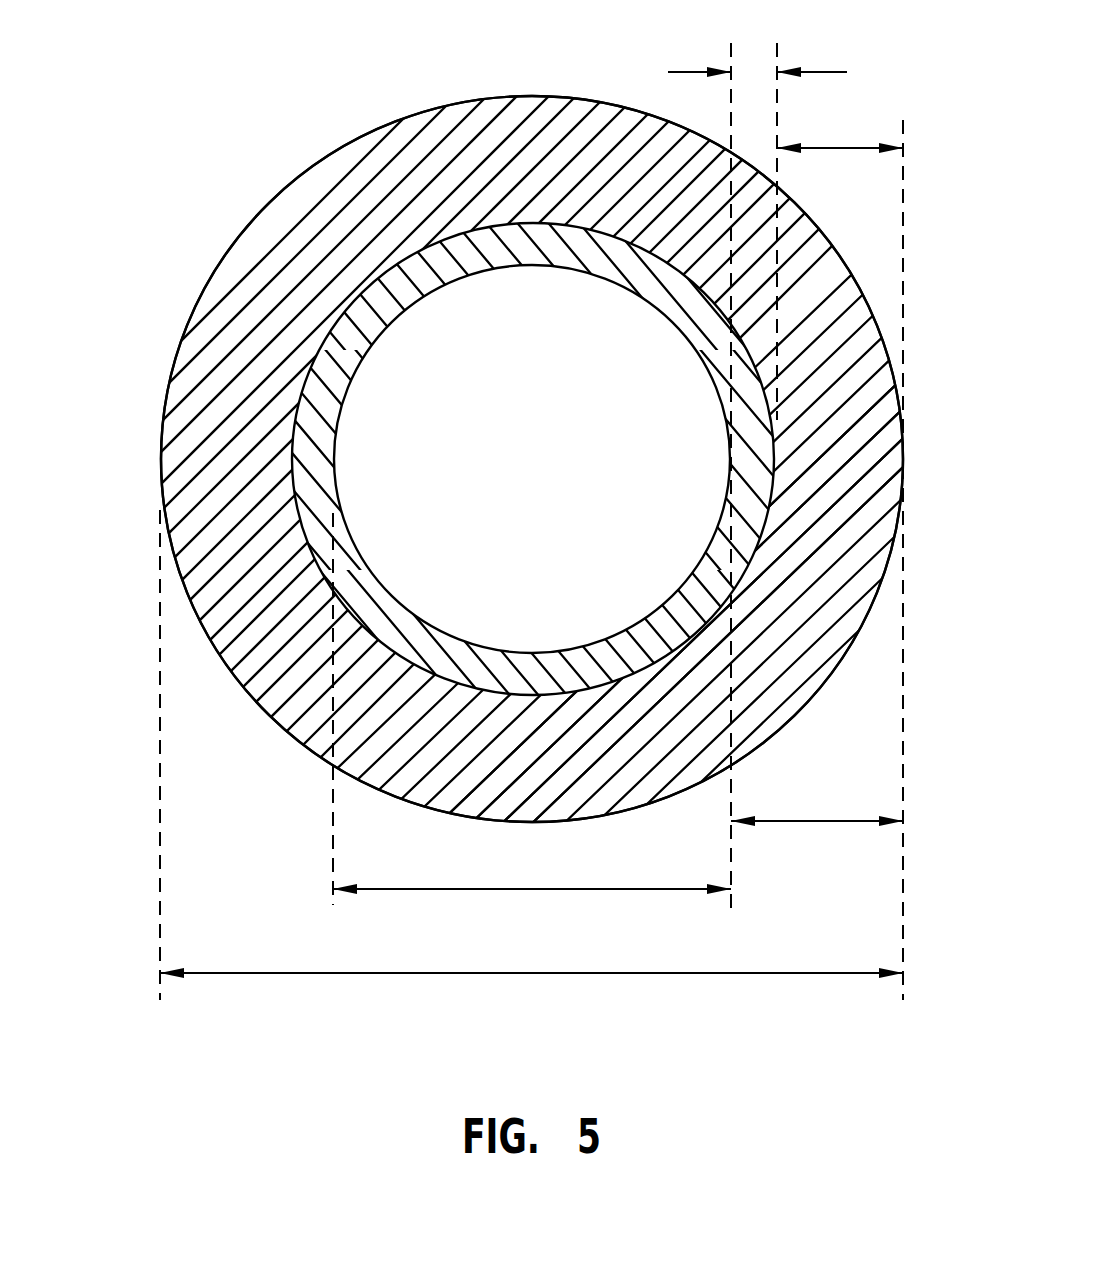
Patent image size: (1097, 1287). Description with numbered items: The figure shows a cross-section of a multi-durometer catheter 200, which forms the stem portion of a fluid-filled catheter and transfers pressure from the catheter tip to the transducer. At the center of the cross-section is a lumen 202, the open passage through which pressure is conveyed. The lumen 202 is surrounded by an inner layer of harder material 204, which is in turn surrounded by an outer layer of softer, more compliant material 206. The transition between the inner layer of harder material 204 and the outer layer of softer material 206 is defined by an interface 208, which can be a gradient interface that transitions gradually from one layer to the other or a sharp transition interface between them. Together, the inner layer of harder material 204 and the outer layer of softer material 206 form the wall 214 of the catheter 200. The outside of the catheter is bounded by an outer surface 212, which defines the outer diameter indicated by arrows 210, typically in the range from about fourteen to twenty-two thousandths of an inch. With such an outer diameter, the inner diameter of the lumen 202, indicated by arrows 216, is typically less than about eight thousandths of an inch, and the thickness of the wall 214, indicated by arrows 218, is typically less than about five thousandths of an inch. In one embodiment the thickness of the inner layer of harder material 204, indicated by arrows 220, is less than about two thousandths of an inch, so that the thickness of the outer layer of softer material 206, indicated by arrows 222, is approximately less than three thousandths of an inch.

The multi-durometer catheter 200 is at (198, 154).
The lumen 202 is at (440, 282).
The inner layer of harder material 204 is at (308, 421).
The outer layer of softer material 206 is at (215, 463).
The interface 208 is at (500, 228).
The arrows indicating outer diameter 210 is at (536, 974).
The outer surface 212 is at (573, 98).
The wall 214 is at (756, 684).
The arrows indicating inner diameter of lumen 216 is at (536, 890).
The arrows indicating wall thickness 218 is at (813, 822).
The arrows indicating thickness of inner layer 220 is at (831, 71).
The arrows indicating thickness of outer layer 222 is at (839, 147).